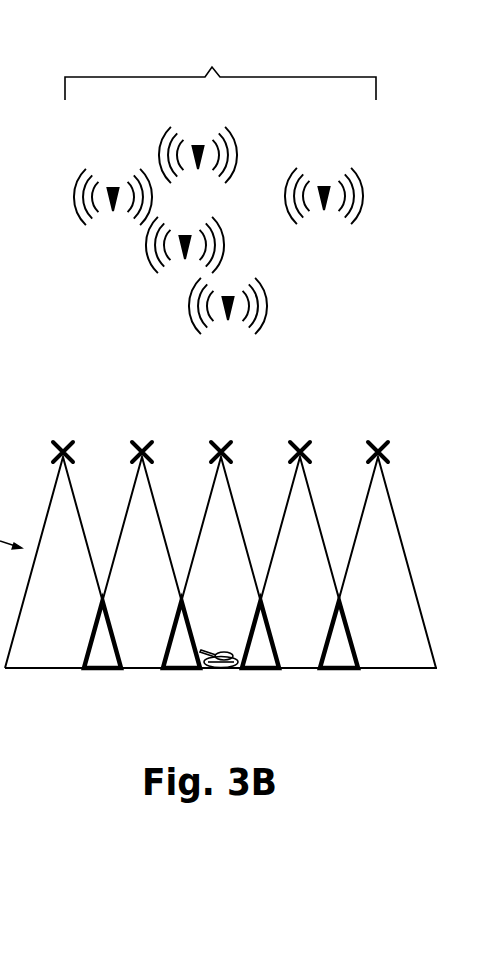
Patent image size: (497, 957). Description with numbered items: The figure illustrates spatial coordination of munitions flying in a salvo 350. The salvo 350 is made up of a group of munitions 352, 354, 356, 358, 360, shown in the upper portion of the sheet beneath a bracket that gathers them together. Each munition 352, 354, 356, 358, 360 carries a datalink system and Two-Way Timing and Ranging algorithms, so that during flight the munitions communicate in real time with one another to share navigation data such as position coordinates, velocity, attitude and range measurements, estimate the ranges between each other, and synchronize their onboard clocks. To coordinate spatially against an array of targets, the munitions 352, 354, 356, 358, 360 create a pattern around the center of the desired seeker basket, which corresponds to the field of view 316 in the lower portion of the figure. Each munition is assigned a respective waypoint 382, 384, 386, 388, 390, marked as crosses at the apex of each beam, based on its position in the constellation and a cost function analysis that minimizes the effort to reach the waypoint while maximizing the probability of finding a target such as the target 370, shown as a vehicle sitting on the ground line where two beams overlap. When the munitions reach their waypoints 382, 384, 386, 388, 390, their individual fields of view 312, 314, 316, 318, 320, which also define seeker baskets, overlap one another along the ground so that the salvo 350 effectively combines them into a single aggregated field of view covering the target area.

The salvo 350 is at (211, 66).
The munition 352 is at (117, 187).
The munition 354 is at (186, 235).
The munition 356 is at (229, 296).
The munition 358 is at (202, 145).
The munition 360 is at (327, 186).
The field of view 312 is at (50, 506).
The field of view 314 is at (129, 506).
The field of view 316 is at (208, 506).
The field of view 318 is at (287, 506).
The field of view 320 is at (365, 506).
The waypoint 382 is at (62, 443).
The waypoint 384 is at (141, 443).
The waypoint 386 is at (220, 443).
The waypoint 388 is at (298, 443).
The waypoint 390 is at (376, 443).
The target 370 is at (227, 668).